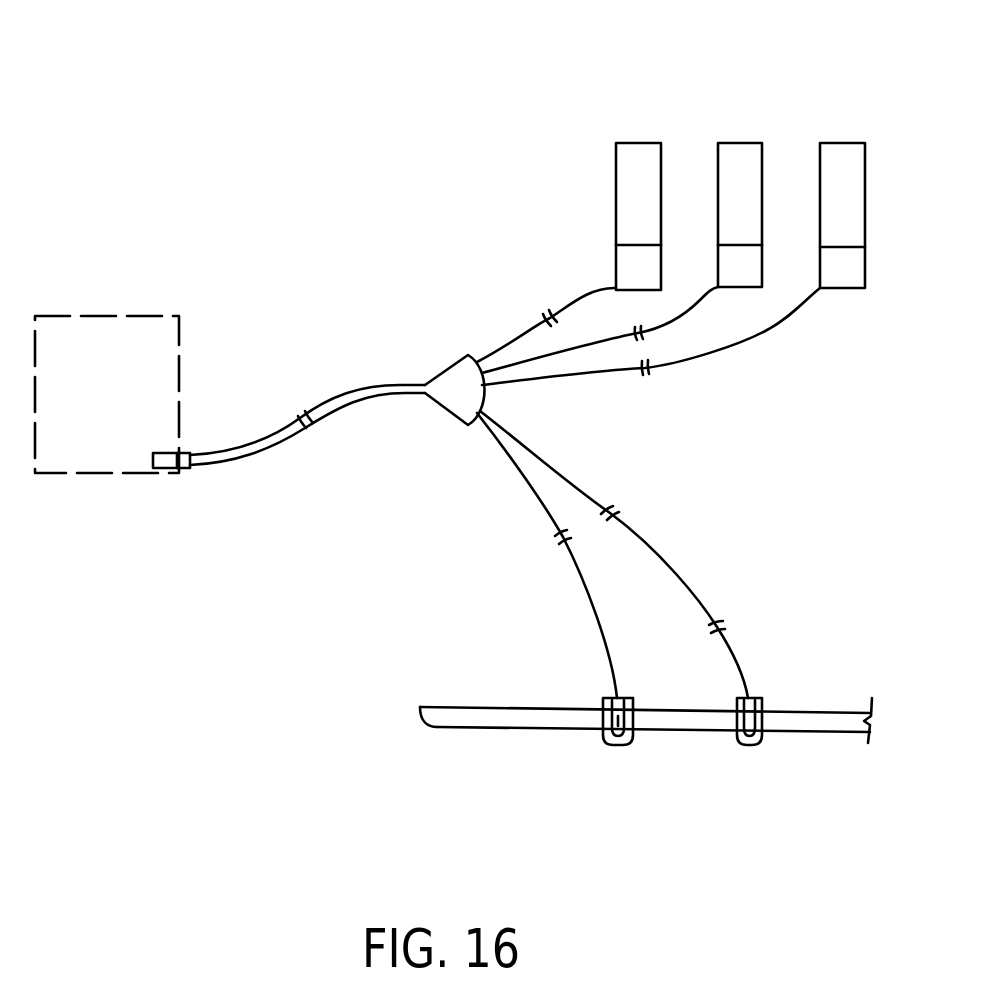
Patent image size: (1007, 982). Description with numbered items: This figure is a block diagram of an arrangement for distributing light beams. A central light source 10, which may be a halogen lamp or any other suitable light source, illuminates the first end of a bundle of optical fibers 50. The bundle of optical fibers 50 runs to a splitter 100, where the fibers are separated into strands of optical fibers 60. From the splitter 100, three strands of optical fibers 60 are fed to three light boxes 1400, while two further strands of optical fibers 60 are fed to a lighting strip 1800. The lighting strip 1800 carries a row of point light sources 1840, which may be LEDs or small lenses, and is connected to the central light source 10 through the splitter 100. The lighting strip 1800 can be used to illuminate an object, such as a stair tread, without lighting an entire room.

The central light source 10 is at (108, 350).
The bundle of optical fibers 50 is at (322, 410).
The splitter 100 is at (460, 388).
The strands of optical fibers 60 is at (695, 353).
The light boxes 1400 is at (638, 157).
The lighting strip 1800 is at (515, 718).
The point light sources 1840 is at (747, 743).